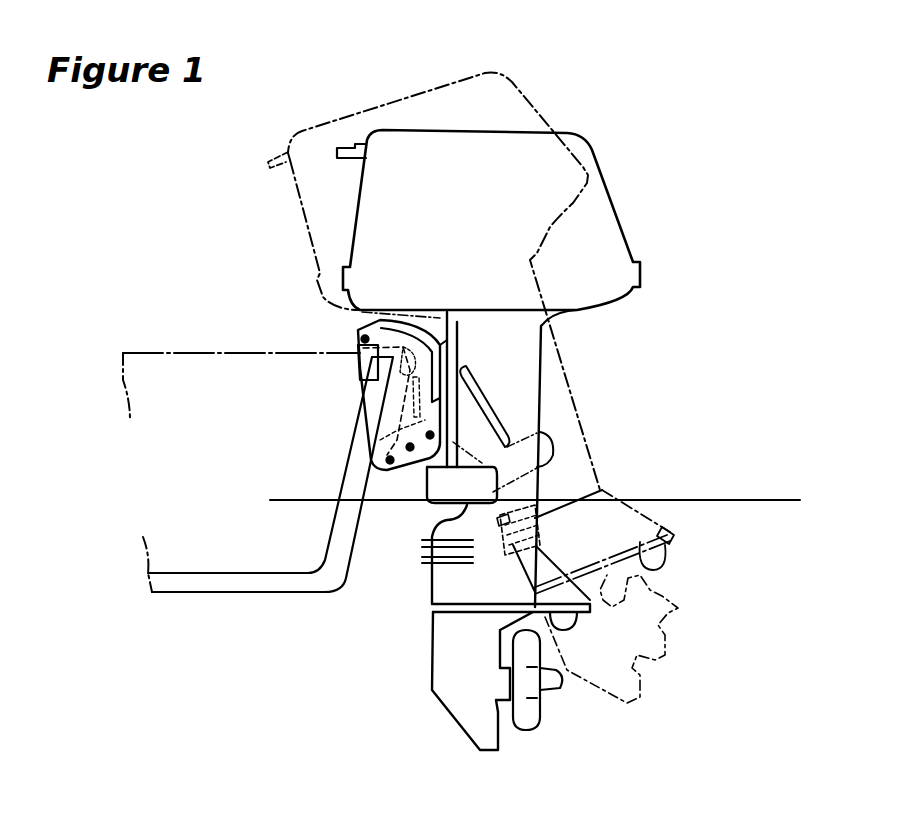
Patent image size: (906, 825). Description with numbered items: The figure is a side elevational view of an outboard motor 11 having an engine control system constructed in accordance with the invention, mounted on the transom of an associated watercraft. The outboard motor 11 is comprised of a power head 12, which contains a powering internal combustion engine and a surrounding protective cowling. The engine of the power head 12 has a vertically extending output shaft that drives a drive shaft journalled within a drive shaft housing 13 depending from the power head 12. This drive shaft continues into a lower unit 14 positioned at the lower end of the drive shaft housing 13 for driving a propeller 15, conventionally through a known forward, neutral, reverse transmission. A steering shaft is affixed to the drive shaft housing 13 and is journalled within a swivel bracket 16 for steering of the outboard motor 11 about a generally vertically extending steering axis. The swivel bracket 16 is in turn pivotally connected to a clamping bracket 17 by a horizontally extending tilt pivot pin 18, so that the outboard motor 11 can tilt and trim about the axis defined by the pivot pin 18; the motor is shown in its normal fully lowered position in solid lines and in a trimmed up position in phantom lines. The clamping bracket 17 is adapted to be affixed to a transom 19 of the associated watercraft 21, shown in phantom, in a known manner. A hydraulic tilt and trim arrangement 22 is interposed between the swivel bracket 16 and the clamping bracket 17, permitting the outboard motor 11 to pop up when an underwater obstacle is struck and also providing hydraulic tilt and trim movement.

The outboard motor 11 is at (632, 203).
The power head 12 is at (601, 153).
The drive shaft housing 13 is at (543, 405).
The lower unit 14 is at (432, 653).
The propeller 15 is at (540, 712).
The swivel bracket 16 is at (430, 456).
The clamping bracket 17 is at (360, 356).
The tilt pivot pin 18 is at (360, 339).
The transom 19 is at (343, 472).
The watercraft 21 is at (125, 352).
The hydraulic tilt and trim arrangement 22 is at (377, 420).